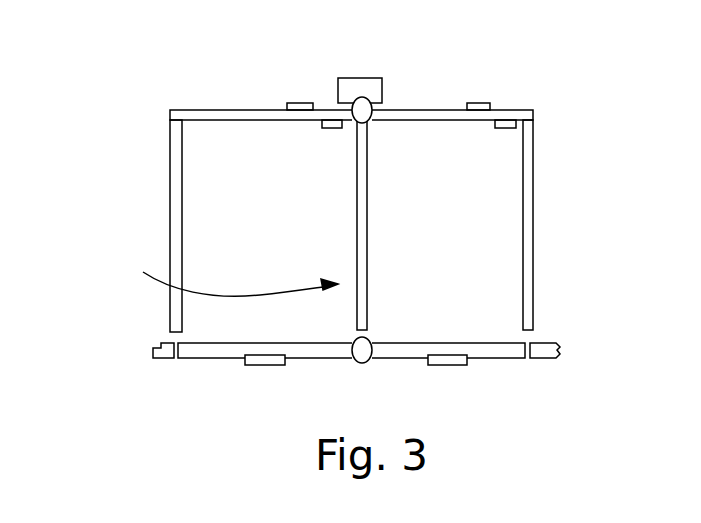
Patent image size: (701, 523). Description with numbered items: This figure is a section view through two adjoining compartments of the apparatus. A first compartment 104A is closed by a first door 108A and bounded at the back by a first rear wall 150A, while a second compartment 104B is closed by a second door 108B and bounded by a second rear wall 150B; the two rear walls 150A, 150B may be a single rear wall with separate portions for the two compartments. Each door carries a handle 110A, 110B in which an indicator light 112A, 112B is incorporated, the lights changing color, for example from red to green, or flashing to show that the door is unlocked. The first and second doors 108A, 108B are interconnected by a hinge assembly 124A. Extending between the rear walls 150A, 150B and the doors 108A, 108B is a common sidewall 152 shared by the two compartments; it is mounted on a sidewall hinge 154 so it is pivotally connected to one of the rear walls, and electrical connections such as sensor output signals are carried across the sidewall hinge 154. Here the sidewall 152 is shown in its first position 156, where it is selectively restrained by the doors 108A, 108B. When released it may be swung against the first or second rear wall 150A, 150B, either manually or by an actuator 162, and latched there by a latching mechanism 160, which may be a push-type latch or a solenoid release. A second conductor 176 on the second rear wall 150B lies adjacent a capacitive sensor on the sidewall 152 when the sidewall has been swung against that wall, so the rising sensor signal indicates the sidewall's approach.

The first compartment 104A is at (312, 237).
The second compartment 104B is at (500, 249).
The first door 108A is at (193, 360).
The second door 108B is at (403, 358).
The handle 110A is at (240, 360).
The handle 110B is at (470, 362).
The indicator light 112A is at (262, 366).
The indicator light 112B is at (450, 366).
The first hinge assembly 124A is at (362, 363).
The first rear wall 150A is at (253, 110).
The second rear wall 150B is at (451, 110).
The common sidewall 152 is at (367, 200).
The sidewall hinge 154 is at (376, 105).
The first position 156 is at (221, 267).
The latching mechanism 160 is at (498, 110).
The actuator 162 is at (352, 78).
The second conductor 176 is at (500, 128).